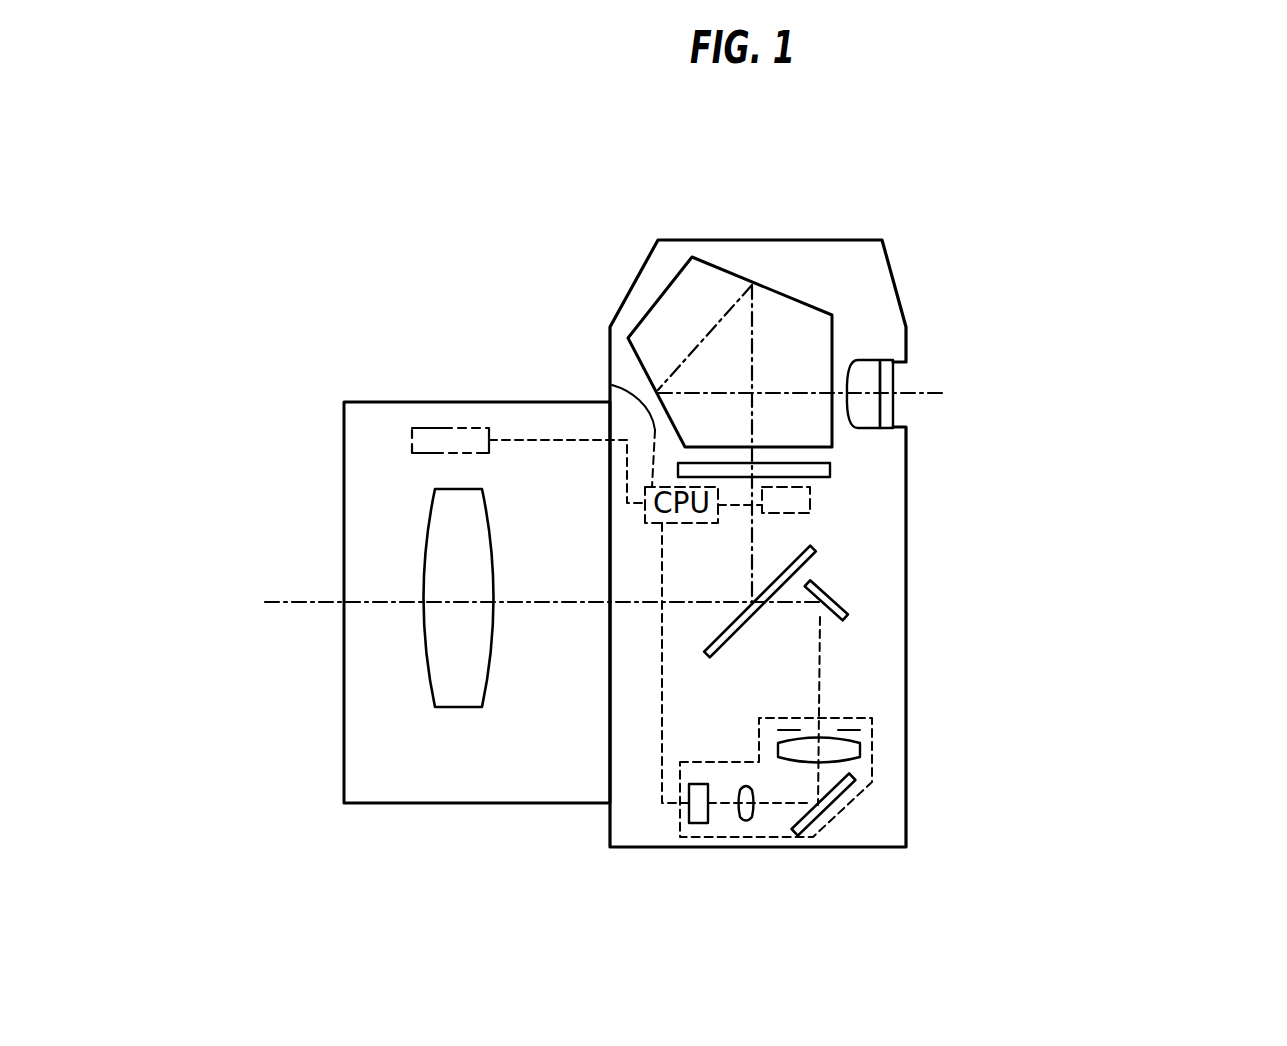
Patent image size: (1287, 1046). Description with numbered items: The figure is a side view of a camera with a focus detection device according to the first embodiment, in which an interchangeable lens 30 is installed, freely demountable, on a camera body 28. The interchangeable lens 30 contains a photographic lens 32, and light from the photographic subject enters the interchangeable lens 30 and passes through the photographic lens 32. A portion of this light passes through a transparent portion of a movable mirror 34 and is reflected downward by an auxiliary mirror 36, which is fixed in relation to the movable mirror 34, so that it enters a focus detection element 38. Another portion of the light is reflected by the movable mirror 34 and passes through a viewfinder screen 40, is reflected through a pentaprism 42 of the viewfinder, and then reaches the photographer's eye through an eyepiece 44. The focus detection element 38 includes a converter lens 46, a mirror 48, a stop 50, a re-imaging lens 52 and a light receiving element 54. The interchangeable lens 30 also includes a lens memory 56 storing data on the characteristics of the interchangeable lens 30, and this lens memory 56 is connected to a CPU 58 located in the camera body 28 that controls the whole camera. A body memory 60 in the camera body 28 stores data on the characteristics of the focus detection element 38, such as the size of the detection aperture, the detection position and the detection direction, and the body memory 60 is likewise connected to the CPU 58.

The camera body 28 is at (804, 240).
The interchangeable lens 30 is at (380, 401).
The photographic lens 32 is at (443, 655).
The movable mirror 34 is at (813, 545).
The auxiliary mirror 36 is at (840, 594).
The focus detection element 38 is at (865, 708).
The viewfinder screen 40 is at (830, 466).
The pentaprism 42 is at (710, 283).
The eyepiece 44 is at (870, 380).
The converter lens 46 is at (860, 750).
The mirror 48 is at (855, 790).
The stop 50 is at (760, 815).
The re-imaging lens 52 is at (738, 812).
The light receiving element 54 is at (689, 806).
The lens memory 56 is at (413, 432).
The CPU 58 is at (605, 377).
The body memory 60 is at (810, 500).